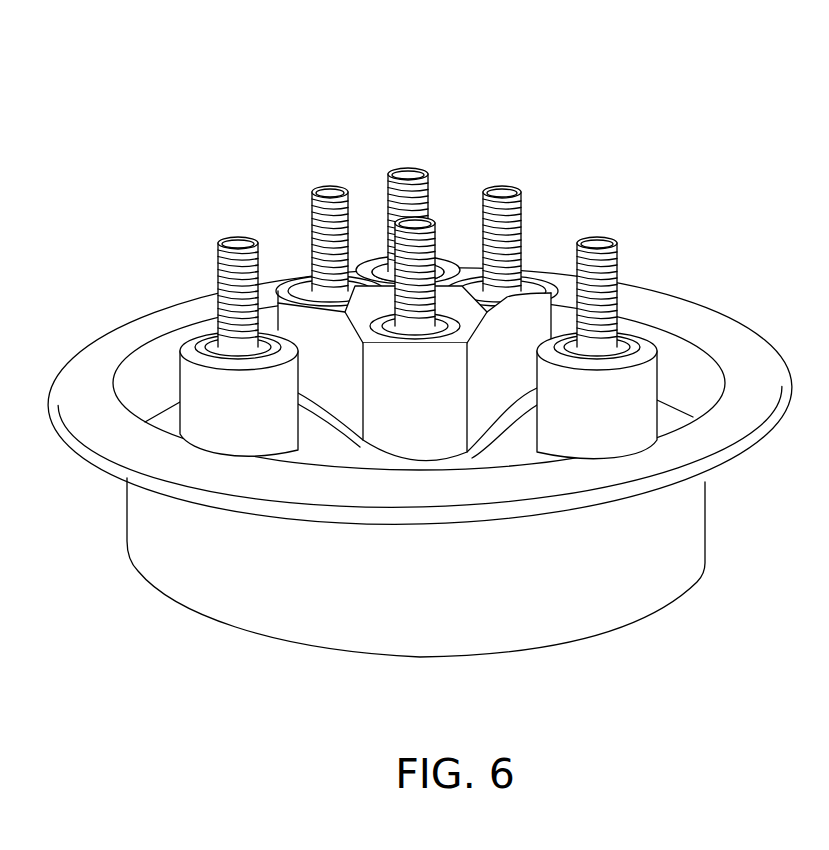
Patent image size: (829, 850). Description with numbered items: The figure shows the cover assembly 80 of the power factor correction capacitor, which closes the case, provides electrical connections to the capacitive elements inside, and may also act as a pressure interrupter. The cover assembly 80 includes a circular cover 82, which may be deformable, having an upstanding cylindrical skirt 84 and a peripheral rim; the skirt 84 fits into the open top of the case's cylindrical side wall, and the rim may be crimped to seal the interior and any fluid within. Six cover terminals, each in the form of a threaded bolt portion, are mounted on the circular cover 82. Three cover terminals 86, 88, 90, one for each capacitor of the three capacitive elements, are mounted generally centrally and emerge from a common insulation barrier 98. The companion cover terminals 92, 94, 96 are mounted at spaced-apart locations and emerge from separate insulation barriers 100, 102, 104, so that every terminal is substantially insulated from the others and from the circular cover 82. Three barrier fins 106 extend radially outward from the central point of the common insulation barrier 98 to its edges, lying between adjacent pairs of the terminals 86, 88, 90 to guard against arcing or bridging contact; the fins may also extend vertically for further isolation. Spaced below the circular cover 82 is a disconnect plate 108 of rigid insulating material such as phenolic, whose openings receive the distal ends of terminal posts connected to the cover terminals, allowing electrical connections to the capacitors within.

The cover assembly 80 is at (660, 78).
The circular cover 82 is at (419, 278).
The upstanding cylindrical skirt 84 is at (672, 392).
The cover terminal 86 is at (330, 192).
The cover terminal 88 is at (500, 192).
The cover terminal 90 is at (421, 223).
The cover terminal 92 is at (238, 243).
The cover terminal 94 is at (408, 174).
The cover terminal 96 is at (597, 243).
The common insulation barrier 98 is at (382, 315).
The insulation barrier 100 is at (239, 311).
The insulation barrier 102 is at (597, 315).
The insulation barrier 104 is at (442, 258).
The barrier fin 106 is at (357, 301).
The disconnect plate 108 is at (167, 560).